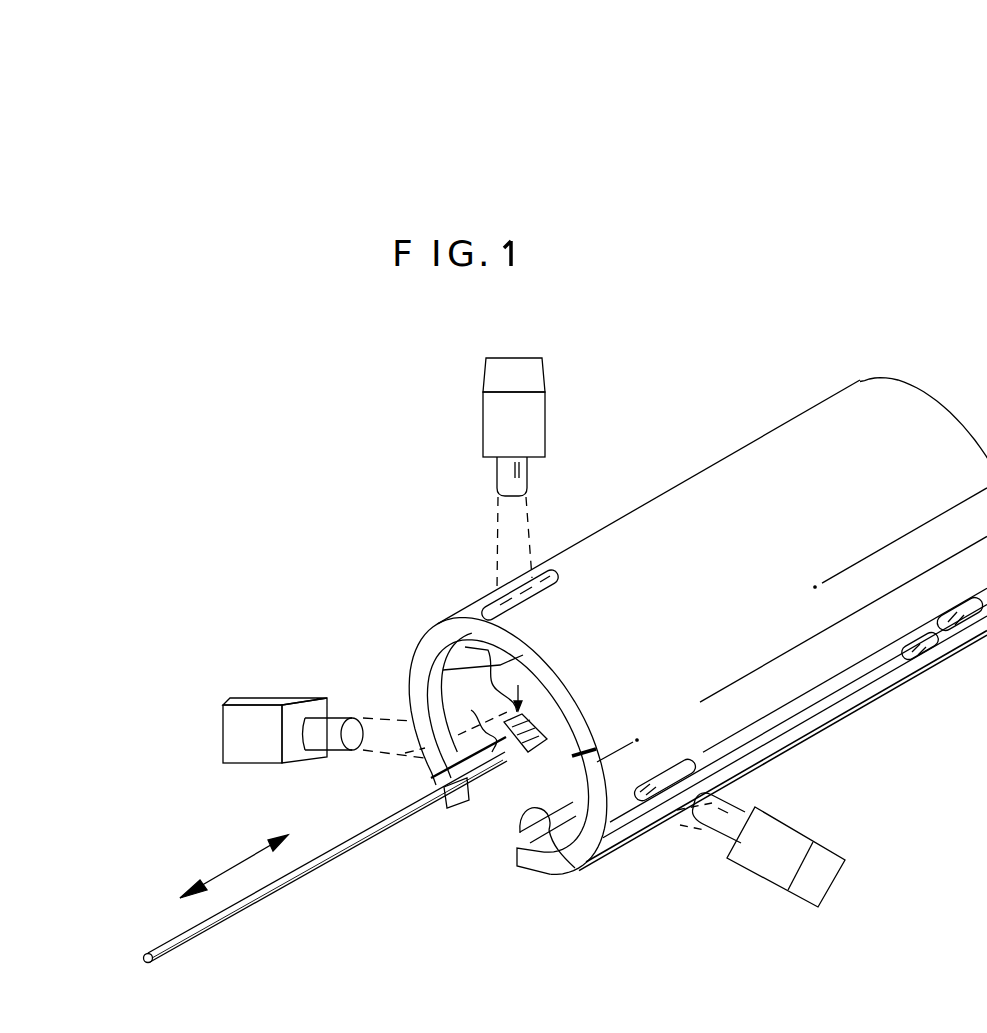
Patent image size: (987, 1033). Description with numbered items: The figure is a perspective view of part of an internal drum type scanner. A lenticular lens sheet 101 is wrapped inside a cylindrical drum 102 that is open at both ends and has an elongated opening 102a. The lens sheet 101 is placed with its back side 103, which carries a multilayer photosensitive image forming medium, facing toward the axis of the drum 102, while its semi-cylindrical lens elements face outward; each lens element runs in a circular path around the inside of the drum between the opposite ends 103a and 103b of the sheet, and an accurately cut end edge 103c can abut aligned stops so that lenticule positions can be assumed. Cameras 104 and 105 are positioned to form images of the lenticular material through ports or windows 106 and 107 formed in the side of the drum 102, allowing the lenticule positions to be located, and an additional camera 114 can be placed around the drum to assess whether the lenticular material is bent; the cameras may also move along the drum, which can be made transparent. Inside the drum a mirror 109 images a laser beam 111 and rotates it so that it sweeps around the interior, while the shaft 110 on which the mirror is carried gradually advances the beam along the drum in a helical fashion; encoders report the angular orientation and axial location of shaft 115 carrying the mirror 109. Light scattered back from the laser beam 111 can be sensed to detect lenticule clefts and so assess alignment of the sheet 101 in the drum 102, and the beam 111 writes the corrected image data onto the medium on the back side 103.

The lenticular lens sheet 101 is at (603, 760).
The cylindrical drum 102 is at (757, 465).
The elongated opening 102a is at (508, 808).
The back side 103 is at (500, 782).
The end of lens sheet 103a is at (470, 793).
The end of lens sheet 103b is at (547, 852).
The end edge 103c is at (510, 670).
The camera 104 is at (270, 698).
The camera 105 is at (777, 833).
The port 106 is at (417, 770).
The port 107 is at (643, 823).
The mirror 109 is at (553, 695).
The shaft 110 is at (255, 898).
The laser beam 111 is at (462, 645).
The camera 114 is at (525, 422).
The shaft 115 is at (230, 865).